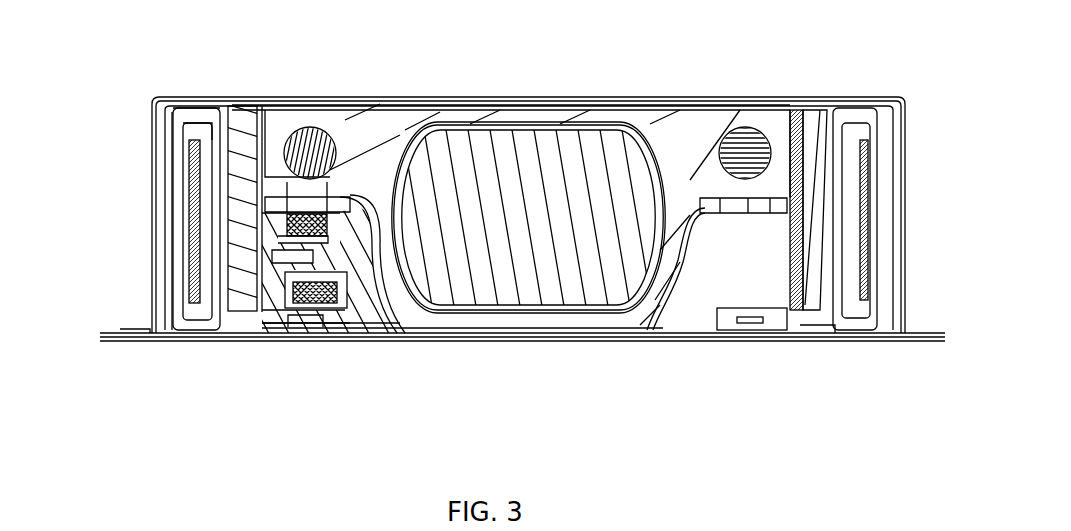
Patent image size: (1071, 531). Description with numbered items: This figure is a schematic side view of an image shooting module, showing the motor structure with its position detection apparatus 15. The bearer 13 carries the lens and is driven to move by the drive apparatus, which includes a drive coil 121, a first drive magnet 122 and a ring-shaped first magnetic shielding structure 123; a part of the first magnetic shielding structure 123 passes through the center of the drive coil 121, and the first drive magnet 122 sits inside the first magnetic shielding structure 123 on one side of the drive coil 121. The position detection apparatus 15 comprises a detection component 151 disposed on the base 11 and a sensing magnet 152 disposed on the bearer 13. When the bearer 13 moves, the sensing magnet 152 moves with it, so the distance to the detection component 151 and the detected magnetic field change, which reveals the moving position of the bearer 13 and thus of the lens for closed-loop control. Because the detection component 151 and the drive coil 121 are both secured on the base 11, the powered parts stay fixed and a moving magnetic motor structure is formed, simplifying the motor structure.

The base 11 is at (158, 262).
The drive coil 121 is at (213, 133).
The first drive magnet 122 is at (240, 128).
The first magnetic shielding structure 123 is at (185, 187).
The bearer 13 is at (352, 268).
The position detection apparatus 15 is at (310, 336).
The detection component 151 is at (315, 313).
The sensing magnet 152 is at (322, 312).